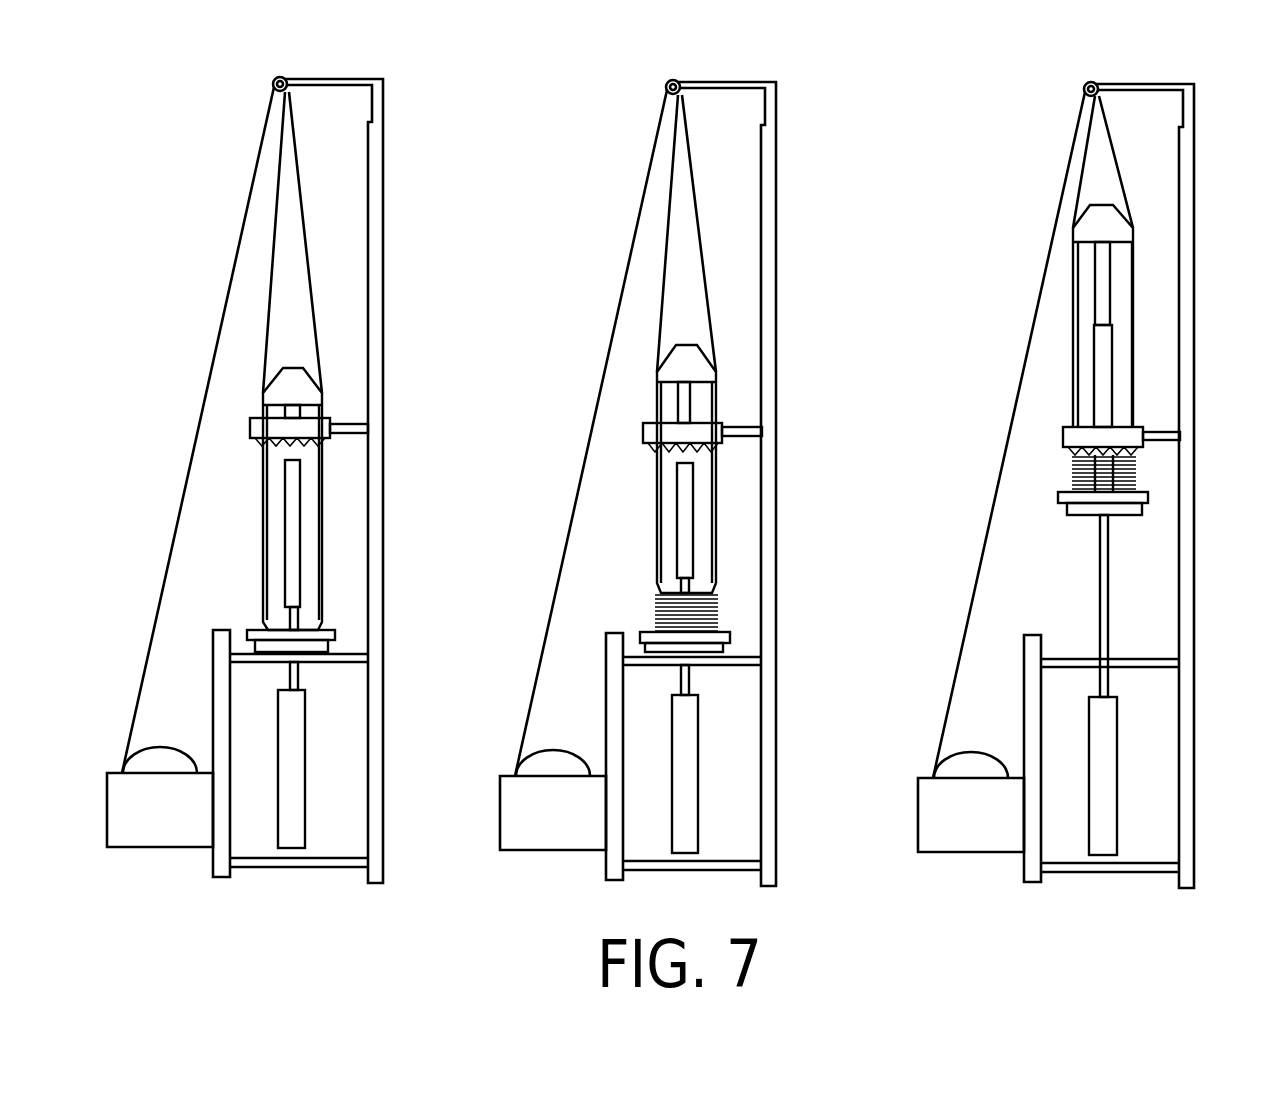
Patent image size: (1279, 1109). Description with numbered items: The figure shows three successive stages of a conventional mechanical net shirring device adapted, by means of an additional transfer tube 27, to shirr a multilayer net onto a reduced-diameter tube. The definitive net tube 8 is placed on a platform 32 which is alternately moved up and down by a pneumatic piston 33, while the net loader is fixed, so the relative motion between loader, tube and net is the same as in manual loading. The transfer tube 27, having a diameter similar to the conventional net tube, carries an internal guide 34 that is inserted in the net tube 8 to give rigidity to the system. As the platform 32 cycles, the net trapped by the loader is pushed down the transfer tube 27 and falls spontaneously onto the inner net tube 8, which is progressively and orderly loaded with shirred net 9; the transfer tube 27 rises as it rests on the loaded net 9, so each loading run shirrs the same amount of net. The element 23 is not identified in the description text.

The net tube 8 is at (330, 638).
The shirred net 9 is at (715, 603).
The container 23 is at (292, 392).
The transfer tube 27 is at (325, 480).
The platform 32 is at (277, 640).
The pneumatic piston 33 is at (295, 727).
The internal guide 34 is at (293, 495).